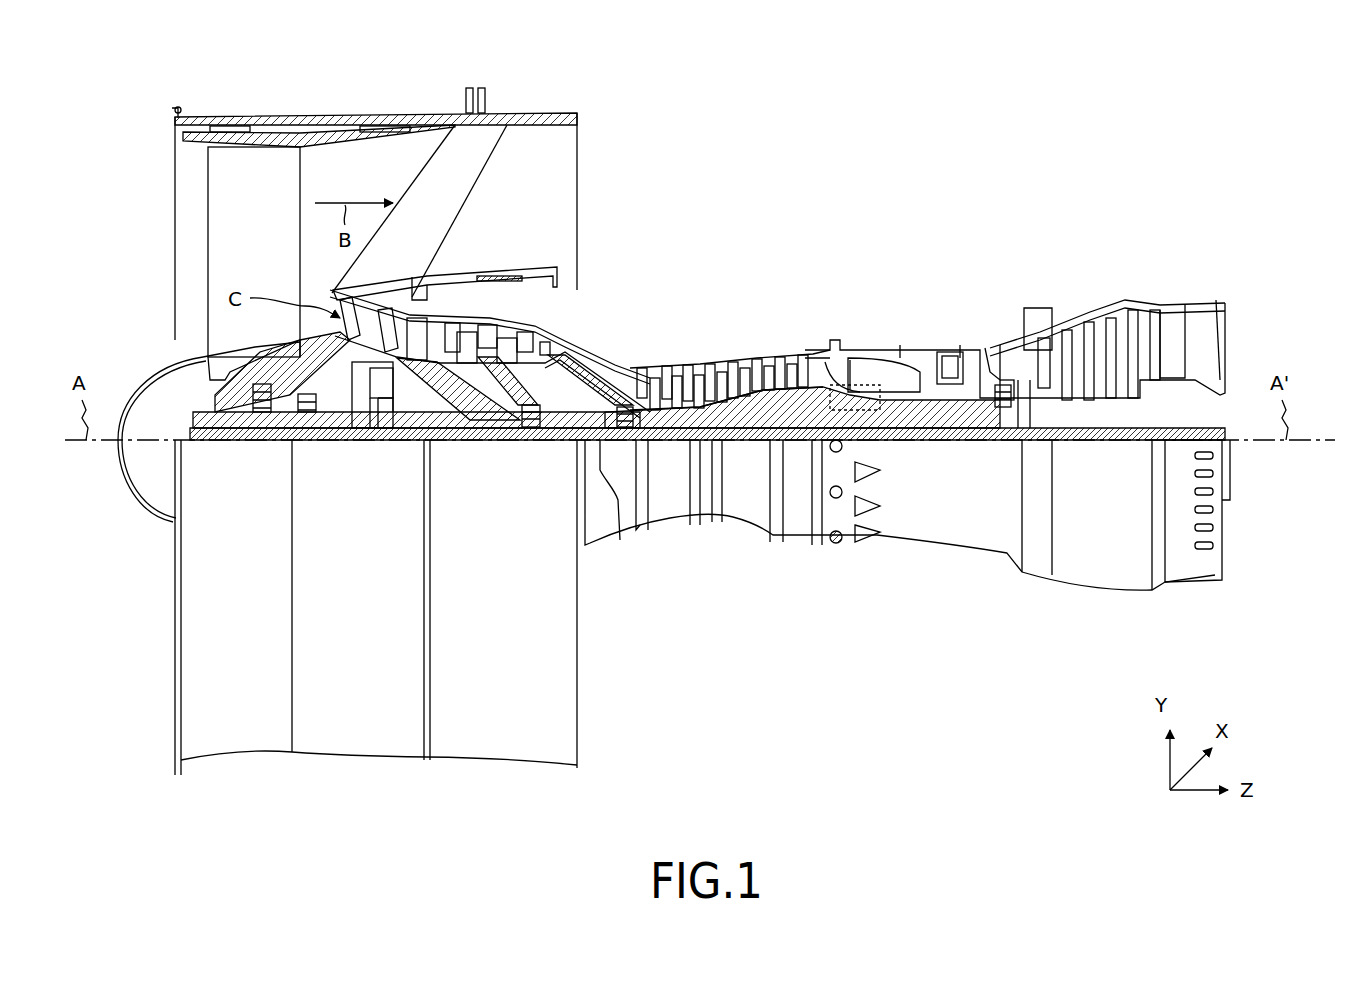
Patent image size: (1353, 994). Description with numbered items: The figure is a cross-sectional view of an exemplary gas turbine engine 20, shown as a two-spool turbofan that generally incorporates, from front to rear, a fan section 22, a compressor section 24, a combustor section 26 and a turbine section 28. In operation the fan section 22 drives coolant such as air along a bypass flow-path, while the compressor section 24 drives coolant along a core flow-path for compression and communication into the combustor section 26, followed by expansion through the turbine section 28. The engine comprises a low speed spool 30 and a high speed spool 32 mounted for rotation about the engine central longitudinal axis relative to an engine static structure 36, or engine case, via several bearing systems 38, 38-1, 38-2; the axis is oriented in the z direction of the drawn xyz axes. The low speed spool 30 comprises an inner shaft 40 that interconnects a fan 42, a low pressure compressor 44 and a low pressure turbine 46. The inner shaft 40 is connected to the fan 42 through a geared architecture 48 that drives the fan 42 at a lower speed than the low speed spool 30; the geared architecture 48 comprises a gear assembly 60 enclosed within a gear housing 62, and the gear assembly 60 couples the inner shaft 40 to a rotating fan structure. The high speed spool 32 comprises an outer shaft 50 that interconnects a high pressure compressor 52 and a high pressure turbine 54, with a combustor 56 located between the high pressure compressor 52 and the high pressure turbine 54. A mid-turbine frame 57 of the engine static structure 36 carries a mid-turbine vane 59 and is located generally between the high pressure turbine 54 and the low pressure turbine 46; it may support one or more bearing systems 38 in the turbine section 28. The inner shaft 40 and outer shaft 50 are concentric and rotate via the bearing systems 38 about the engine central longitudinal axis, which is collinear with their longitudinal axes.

The gas turbine engine 20 is at (930, 152).
The fan section 22 is at (422, 95).
The compressor section 24 is at (830, 232).
The combustor section 26 is at (935, 232).
The turbine section 28 is at (1160, 232).
The low speed spool 30 is at (756, 455).
The high speed spool 32 is at (796, 404).
The engine static structure 36 is at (354, 736).
The bearing system 38 is at (1000, 412).
The bearing system 38-1 is at (262, 414).
The bearing system 38-2 is at (525, 422).
The inner shaft 40 is at (600, 440).
The fan 42 is at (262, 247).
The low pressure compressor 44 is at (508, 339).
The low pressure turbine 46 is at (1088, 330).
The geared architecture 48 is at (386, 460).
The outer shaft 50 is at (876, 414).
The high pressure compressor 52 is at (720, 374).
The high pressure turbine 54 is at (950, 352).
The combustor 56 is at (866, 376).
The mid-turbine frame 57 is at (992, 340).
The mid-turbine vane 59 is at (1000, 344).
The gear assembly 60 is at (392, 426).
The gear housing 62 is at (392, 389).